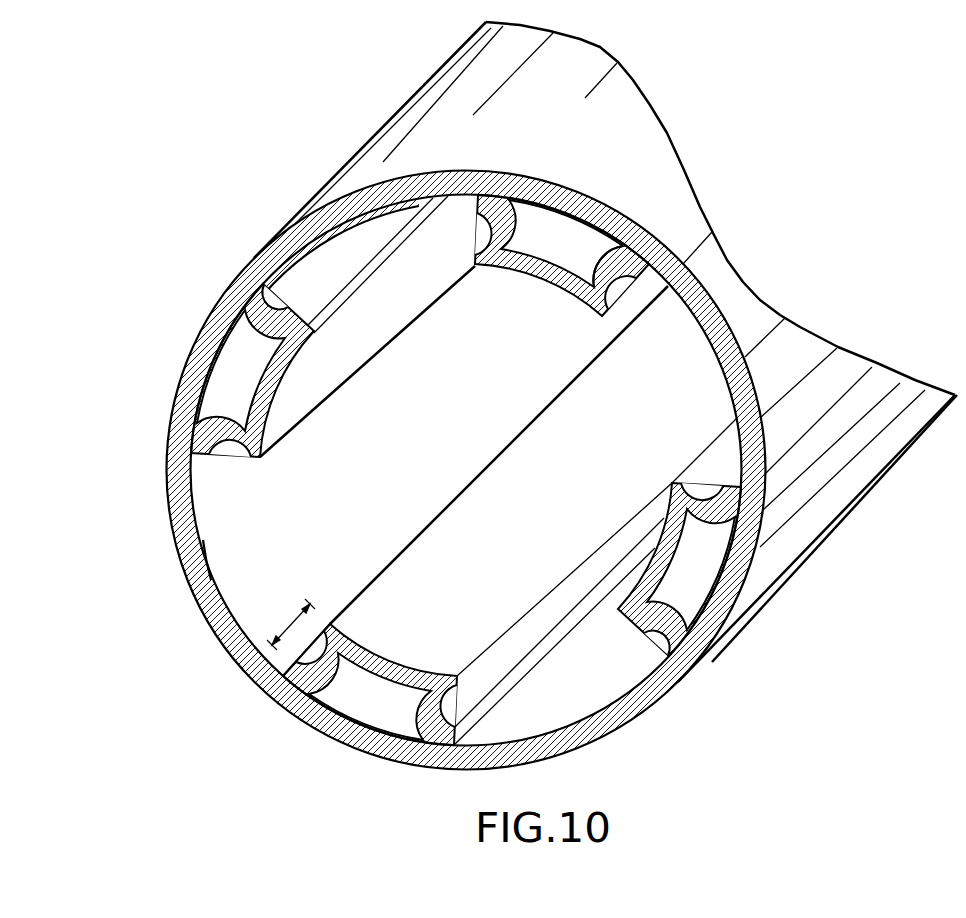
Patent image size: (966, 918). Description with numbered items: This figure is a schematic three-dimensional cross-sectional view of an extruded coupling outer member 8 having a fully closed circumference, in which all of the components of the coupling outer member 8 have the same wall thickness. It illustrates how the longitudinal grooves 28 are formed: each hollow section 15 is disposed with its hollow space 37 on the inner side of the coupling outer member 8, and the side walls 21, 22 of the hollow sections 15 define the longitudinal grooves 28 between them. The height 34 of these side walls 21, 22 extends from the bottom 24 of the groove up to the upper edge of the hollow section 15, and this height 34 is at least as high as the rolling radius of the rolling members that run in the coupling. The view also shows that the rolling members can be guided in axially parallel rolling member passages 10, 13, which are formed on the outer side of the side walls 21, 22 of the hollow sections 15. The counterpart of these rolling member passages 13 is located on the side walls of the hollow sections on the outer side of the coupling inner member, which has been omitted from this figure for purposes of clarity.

The coupling outer member 8 is at (722, 303).
The rolling member passage 10 is at (410, 469).
The rolling member passage 13 is at (228, 483).
The hollow section 15 is at (539, 288).
The side wall 21 is at (597, 255).
The side wall 22 is at (512, 215).
The bottom of the groove 24 is at (225, 572).
The longitudinal groove 28 is at (597, 695).
The height of the side walls 34 is at (278, 636).
The hollow space 37 is at (236, 370).